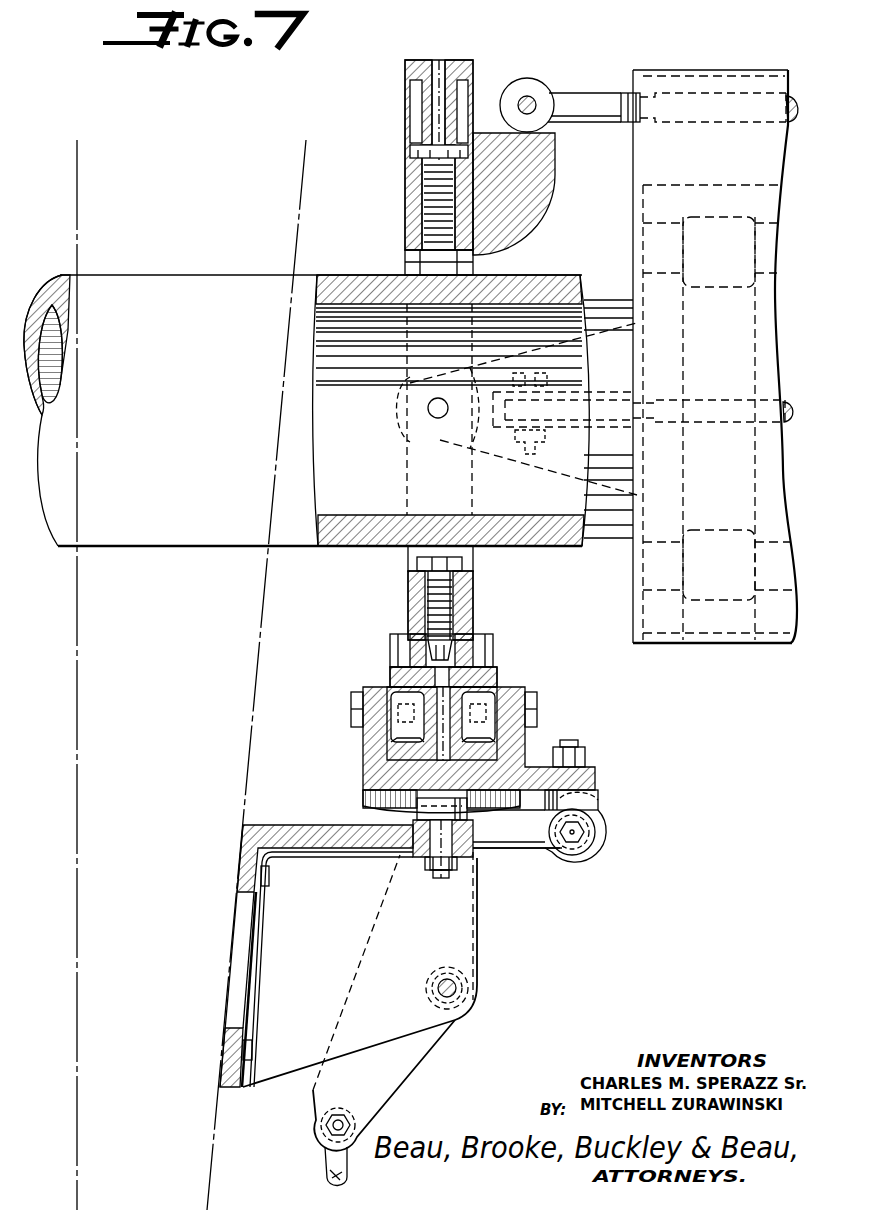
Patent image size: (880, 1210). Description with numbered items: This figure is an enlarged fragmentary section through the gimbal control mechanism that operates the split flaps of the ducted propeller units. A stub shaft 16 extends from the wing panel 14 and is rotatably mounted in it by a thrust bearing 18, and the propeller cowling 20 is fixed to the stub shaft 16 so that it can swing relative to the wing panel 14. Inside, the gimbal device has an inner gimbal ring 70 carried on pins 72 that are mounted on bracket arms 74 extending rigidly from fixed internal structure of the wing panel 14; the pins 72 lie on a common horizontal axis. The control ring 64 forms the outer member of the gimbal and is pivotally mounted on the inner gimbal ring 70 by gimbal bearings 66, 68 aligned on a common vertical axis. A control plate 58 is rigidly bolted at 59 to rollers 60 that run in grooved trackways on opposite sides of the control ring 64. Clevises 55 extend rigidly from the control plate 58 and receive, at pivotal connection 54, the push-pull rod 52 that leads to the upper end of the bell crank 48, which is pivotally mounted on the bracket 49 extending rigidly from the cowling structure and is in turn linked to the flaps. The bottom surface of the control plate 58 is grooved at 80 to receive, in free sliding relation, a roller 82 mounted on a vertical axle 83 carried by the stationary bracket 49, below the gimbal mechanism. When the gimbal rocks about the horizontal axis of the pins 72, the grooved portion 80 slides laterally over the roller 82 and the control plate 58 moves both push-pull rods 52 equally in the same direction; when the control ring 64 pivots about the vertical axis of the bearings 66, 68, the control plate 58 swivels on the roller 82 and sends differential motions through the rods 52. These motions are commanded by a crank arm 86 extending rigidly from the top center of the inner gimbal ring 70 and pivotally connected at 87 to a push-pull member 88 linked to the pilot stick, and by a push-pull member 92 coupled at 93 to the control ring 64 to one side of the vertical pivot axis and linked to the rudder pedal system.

The wing panel 14 is at (678, 646).
The stub shaft 16 is at (335, 275).
The thrust bearing 18 is at (729, 267).
The propeller cowling 20 is at (262, 638).
The bell crank 48 is at (432, 1045).
The bracket 49 is at (312, 955).
The push-pull rod 52 is at (530, 850).
The pivotal connection 54 is at (588, 832).
The clevis 55 is at (598, 795).
The control plate 58 is at (527, 752).
The bolts 59 is at (351, 706).
The roller 60 is at (398, 680).
The control ring 64 is at (473, 656).
The gimbal bearing 66 is at (465, 562).
The gimbal bearing 68 is at (473, 258).
The inner gimbal ring 70 is at (405, 181).
The pin 72 is at (440, 418).
The bracket arm 74 is at (545, 468).
The groove 80 is at (365, 798).
The roller 82 is at (417, 816).
The vertical axle 83 is at (445, 868).
The crank arm 86 is at (547, 205).
The pivotal connection 87 is at (532, 100).
The push-pull member 88 is at (600, 95).
The push-pull member 92 is at (700, 400).
The coupling 93 is at (537, 447).